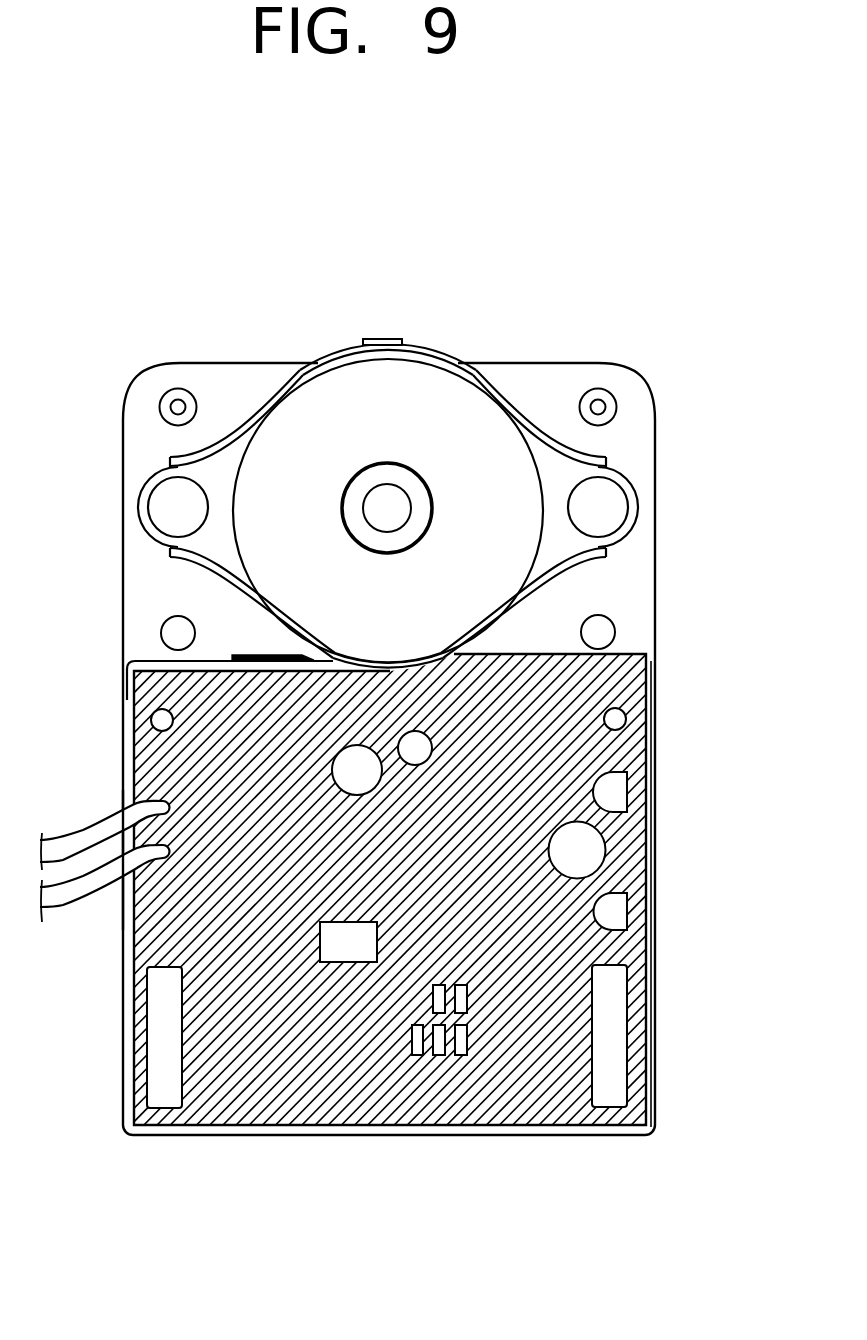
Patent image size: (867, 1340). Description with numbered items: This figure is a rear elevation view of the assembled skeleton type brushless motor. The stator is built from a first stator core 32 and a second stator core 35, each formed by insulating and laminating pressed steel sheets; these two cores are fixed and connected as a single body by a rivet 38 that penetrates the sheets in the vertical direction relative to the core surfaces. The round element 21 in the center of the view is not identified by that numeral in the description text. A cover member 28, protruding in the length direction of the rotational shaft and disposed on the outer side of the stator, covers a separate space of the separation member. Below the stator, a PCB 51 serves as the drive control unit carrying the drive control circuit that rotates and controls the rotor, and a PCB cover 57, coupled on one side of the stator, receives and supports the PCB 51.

The motor 21 is at (449, 393).
The cover member 28 is at (380, 339).
The first stator core 32 is at (567, 377).
The second stator core 35 is at (232, 378).
The rivet 38 is at (598, 403).
The PCB 51 is at (349, 1092).
The PCB cover 57 is at (651, 821).